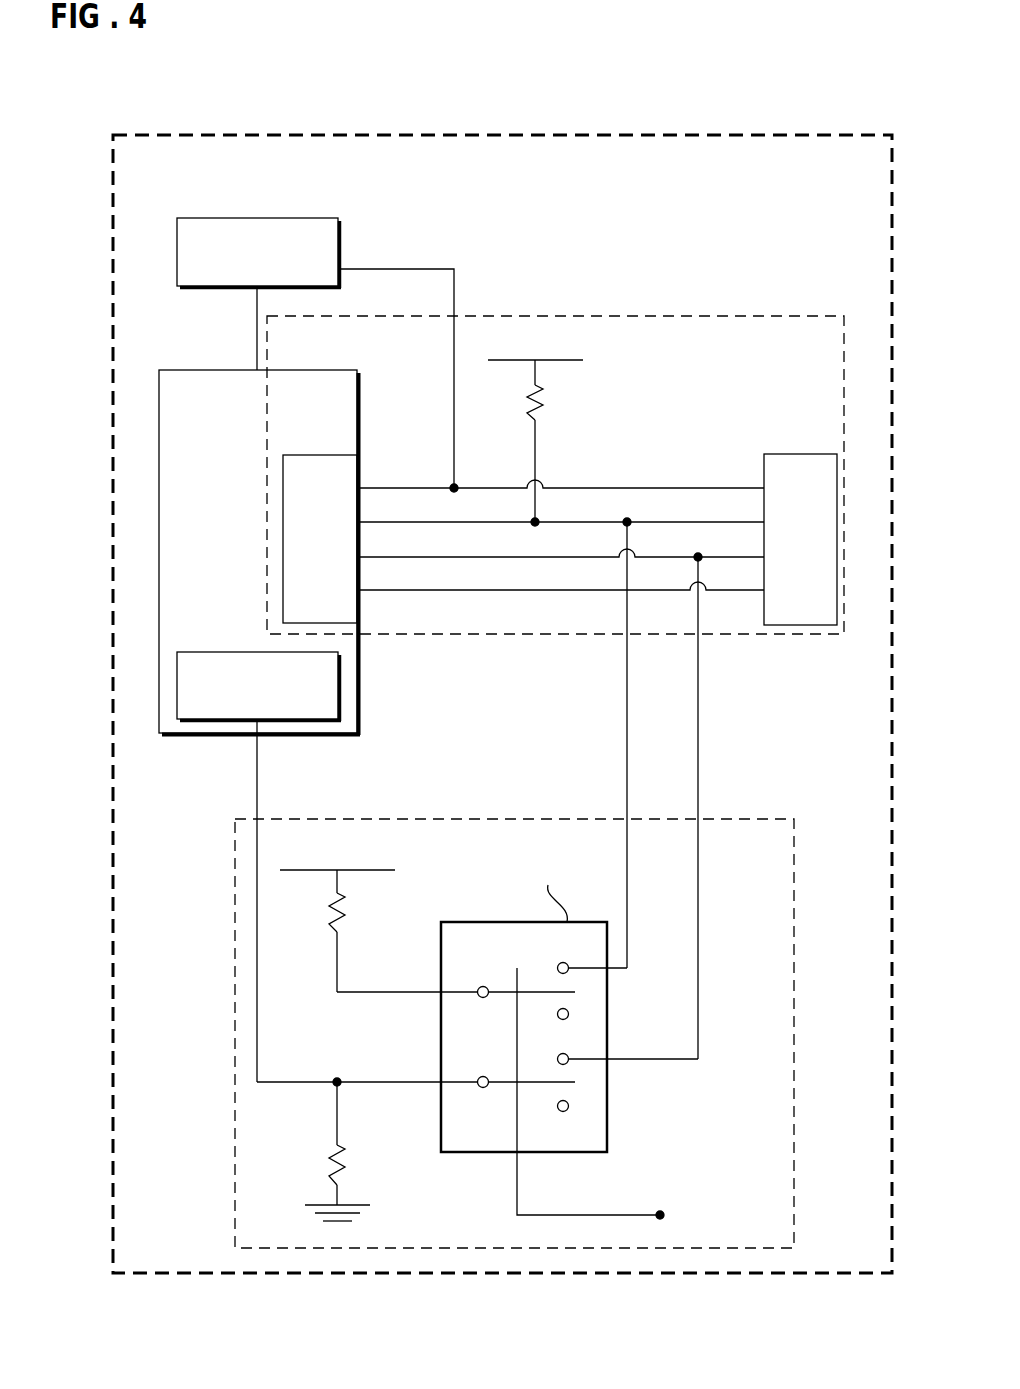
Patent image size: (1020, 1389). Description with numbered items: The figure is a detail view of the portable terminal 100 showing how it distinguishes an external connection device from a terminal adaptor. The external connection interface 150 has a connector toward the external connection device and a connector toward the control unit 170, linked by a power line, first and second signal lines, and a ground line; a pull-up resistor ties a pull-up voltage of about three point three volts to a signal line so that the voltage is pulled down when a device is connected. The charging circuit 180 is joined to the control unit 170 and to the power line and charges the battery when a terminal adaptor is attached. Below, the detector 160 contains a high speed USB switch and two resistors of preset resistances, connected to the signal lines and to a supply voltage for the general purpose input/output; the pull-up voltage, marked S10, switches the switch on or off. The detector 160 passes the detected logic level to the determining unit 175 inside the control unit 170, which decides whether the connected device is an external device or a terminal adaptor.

The portable terminal 100 is at (826, 60).
The external connection interface 150 is at (705, 316).
The detector 160 is at (515, 819).
The control unit 170 is at (191, 370).
The determining unit 175 is at (209, 652).
The charging circuit 180 is at (209, 218).
The pull-up voltage PU_3.3V S10 is at (725, 1227).